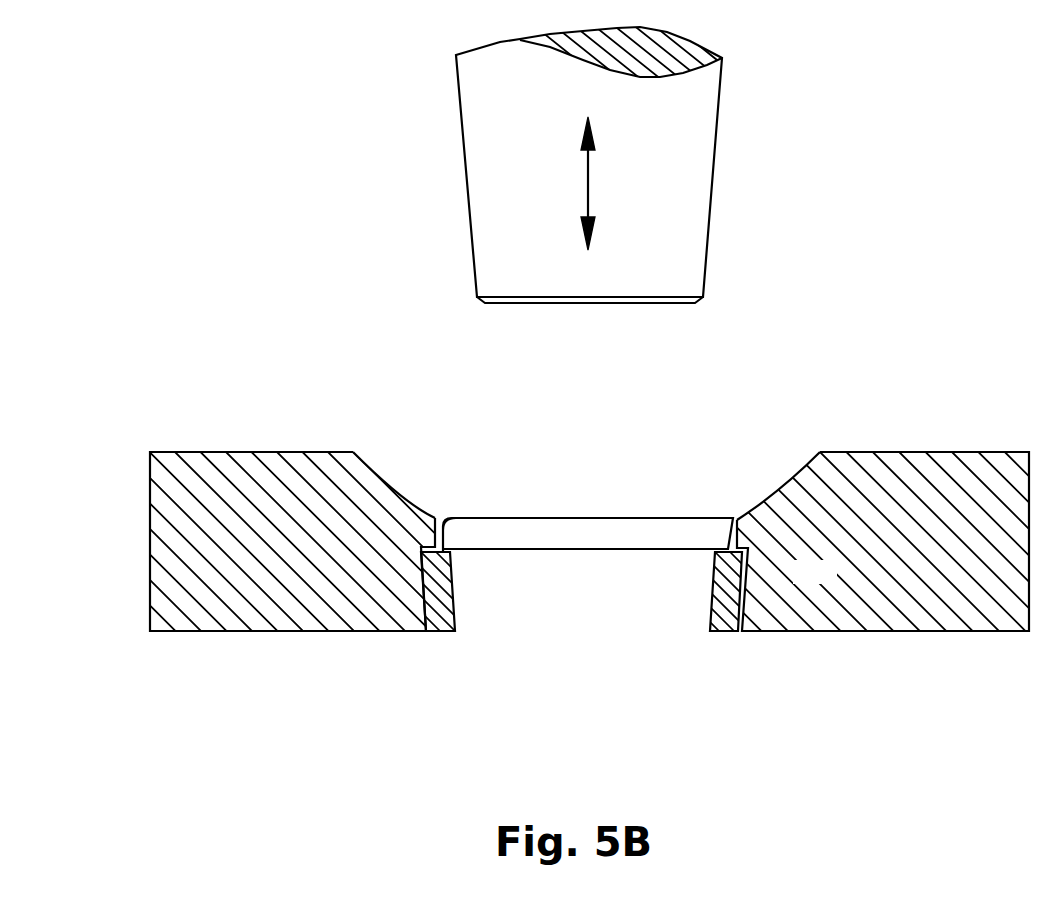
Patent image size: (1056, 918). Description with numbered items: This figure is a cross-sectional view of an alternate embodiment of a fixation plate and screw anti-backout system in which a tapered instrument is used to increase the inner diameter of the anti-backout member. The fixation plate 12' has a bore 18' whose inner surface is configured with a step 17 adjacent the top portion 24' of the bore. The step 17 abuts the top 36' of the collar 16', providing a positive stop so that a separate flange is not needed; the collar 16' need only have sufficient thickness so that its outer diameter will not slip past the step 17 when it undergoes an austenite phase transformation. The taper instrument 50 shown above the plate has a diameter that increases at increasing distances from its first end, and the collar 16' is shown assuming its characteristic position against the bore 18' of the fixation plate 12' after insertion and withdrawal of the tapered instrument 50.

The taper instrument 50 is at (713, 200).
The fixation plate 12' is at (528, 582).
The top portion 24' is at (583, 451).
The step 17 is at (728, 548).
The top of collar 36' is at (474, 495).
The collar 16' is at (441, 637).
The bore 18' is at (735, 602).